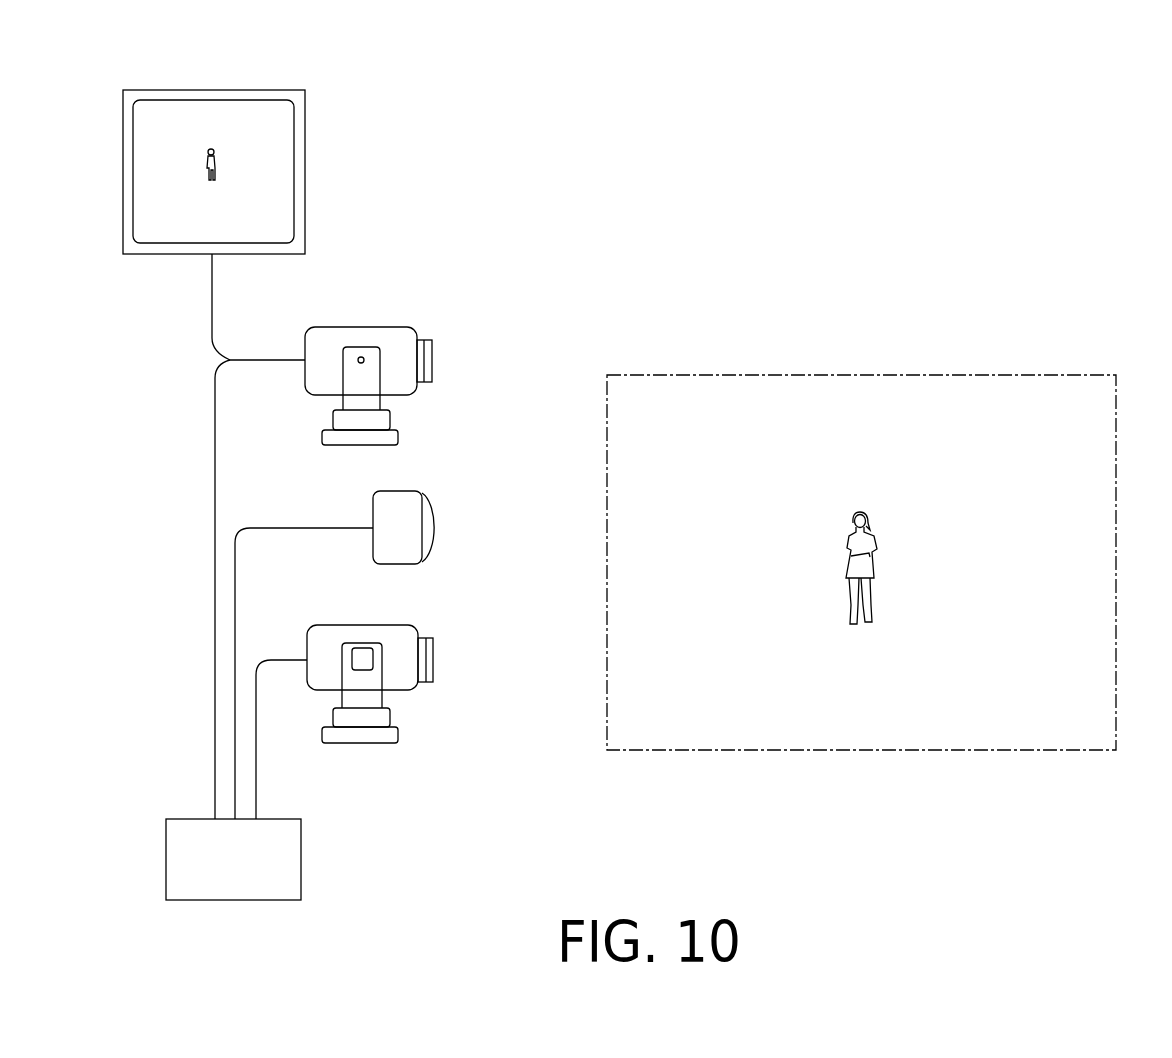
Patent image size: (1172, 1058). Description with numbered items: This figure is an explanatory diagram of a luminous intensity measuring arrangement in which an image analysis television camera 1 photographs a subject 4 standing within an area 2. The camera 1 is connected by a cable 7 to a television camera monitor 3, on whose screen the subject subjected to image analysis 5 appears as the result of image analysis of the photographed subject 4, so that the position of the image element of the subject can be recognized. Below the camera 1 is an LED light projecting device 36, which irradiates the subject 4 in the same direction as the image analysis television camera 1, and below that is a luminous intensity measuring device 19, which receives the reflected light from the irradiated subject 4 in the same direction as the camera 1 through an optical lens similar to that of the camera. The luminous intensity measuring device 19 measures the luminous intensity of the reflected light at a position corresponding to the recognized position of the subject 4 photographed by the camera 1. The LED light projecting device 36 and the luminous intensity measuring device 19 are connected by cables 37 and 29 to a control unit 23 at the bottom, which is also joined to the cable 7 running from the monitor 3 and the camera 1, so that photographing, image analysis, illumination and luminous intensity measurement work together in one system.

The image analysis television camera 1 is at (397, 325).
The imaging area 2 is at (733, 372).
The television camera monitor 3 is at (206, 88).
The subject 4 is at (850, 530).
The subject subjected to image analysis 5 is at (218, 162).
The cable 7 is at (210, 300).
The luminous intensity measuring device 19 is at (417, 627).
The control device 23 is at (302, 855).
The cable 29 is at (257, 773).
The LED light projecting device 36 is at (420, 490).
The cable 37 is at (237, 597).